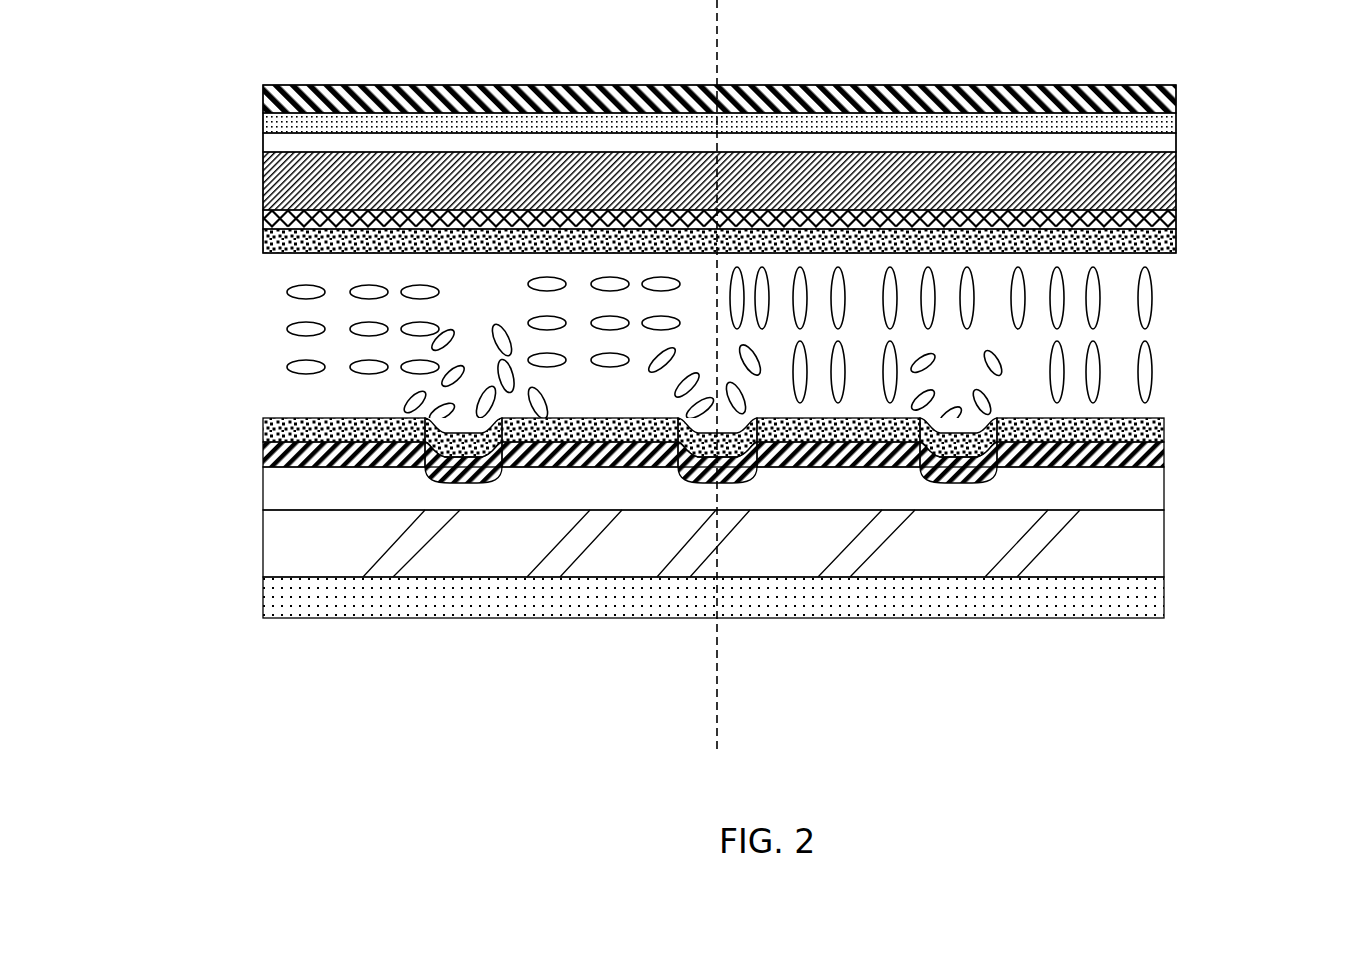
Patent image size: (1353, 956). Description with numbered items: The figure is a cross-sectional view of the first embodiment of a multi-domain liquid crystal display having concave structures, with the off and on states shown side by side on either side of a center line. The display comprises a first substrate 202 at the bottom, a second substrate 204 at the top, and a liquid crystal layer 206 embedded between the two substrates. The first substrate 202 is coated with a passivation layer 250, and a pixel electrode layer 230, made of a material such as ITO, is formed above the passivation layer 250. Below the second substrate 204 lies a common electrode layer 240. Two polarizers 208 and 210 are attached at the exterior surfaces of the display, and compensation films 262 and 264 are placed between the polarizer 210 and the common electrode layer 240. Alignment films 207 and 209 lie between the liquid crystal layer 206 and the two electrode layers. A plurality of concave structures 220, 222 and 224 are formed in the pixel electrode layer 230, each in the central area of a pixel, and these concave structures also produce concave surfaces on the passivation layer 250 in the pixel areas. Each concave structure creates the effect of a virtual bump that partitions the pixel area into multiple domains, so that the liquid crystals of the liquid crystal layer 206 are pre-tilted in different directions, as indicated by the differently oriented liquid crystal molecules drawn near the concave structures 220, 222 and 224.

The first substrate 202 is at (1145, 560).
The second substrate 204 is at (746, 193).
The liquid crystal layer 206 is at (273, 328).
The alignment film 207 is at (1164, 428).
The polarizer 208 is at (1143, 605).
The alignment film 209 is at (1176, 243).
The polarizer 210 is at (1176, 90).
The concave structure 220 is at (455, 481).
The concave structure 222 is at (720, 481).
The concave structure 224 is at (947, 483).
The pixel electrode layer 230 is at (1164, 453).
The common electrode layer 240 is at (1176, 213).
The passivation layer 250 is at (284, 490).
The compensation film 262 is at (1163, 127).
The compensation film 264 is at (1163, 141).